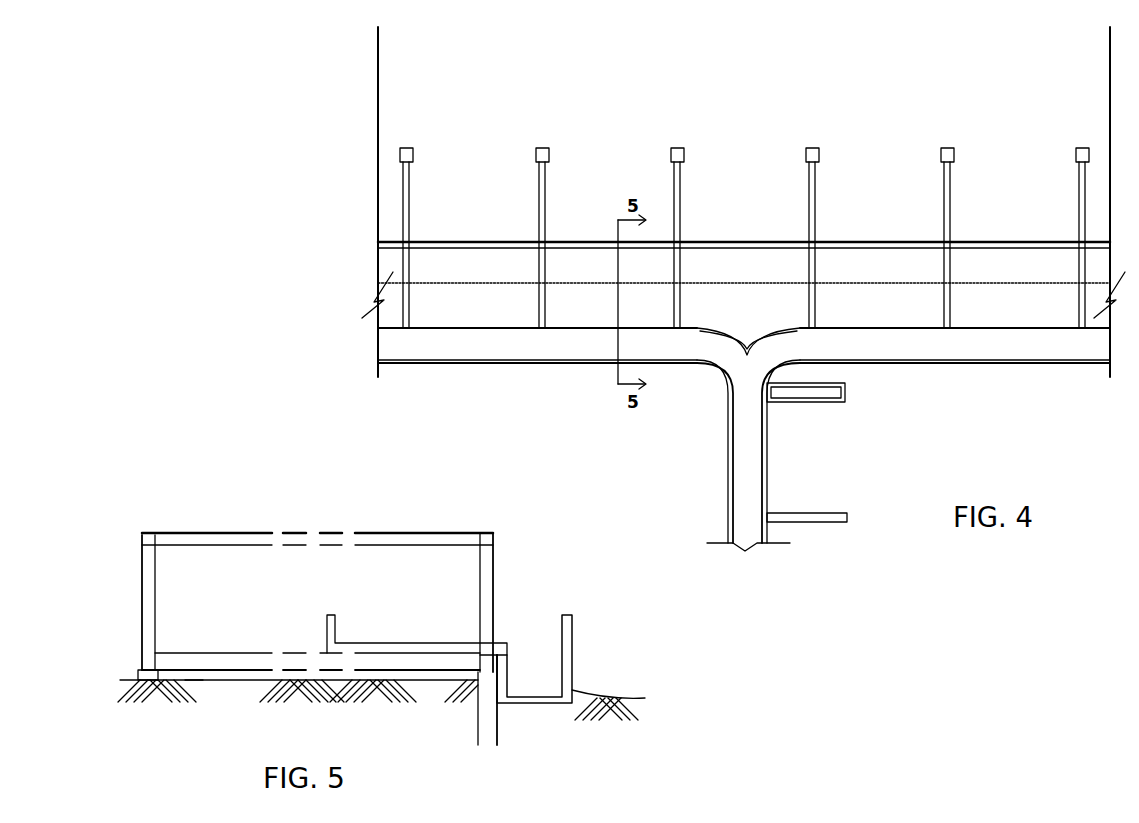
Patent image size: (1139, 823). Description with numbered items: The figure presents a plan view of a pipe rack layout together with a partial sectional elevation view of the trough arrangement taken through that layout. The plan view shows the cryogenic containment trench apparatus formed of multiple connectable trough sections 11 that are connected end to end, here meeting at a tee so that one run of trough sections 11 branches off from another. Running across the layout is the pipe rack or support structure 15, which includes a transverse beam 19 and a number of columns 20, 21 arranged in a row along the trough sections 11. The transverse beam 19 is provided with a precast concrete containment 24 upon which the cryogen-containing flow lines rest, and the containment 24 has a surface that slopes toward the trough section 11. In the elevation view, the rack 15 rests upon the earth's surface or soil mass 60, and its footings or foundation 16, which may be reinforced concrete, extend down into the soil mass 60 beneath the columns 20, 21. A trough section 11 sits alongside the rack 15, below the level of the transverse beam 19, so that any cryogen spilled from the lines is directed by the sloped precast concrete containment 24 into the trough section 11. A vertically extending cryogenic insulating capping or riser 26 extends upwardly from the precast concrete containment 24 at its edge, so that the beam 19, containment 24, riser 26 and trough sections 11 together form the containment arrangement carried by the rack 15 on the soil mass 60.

In FIG. 4, the trough section 11 is at (540, 347).
In FIG. 5, the trough section 11 is at (573, 645).
In FIG. 5, the pipe rack or support structure 15 is at (392, 533).
In FIG. 5, the footings or foundation 16 is at (140, 680).
In FIG. 5, the transverse beam 19 is at (227, 652).
In FIG. 4, the column 20 is at (718, 242).
In FIG. 5, the column 20 is at (147, 595).
In FIG. 4, the column 21 is at (1047, 328).
In FIG. 5, the column 21 is at (490, 598).
In FIG. 4, the precast concrete containment 24 is at (744, 238).
In FIG. 5, the precast concrete containment 24 is at (403, 650).
In FIG. 4, the cryogenic insulating capping or riser 26 is at (853, 283).
In FIG. 5, the cryogenic insulating capping or riser 26 is at (325, 625).
In FIG. 5, the soil mass 60 is at (133, 676).